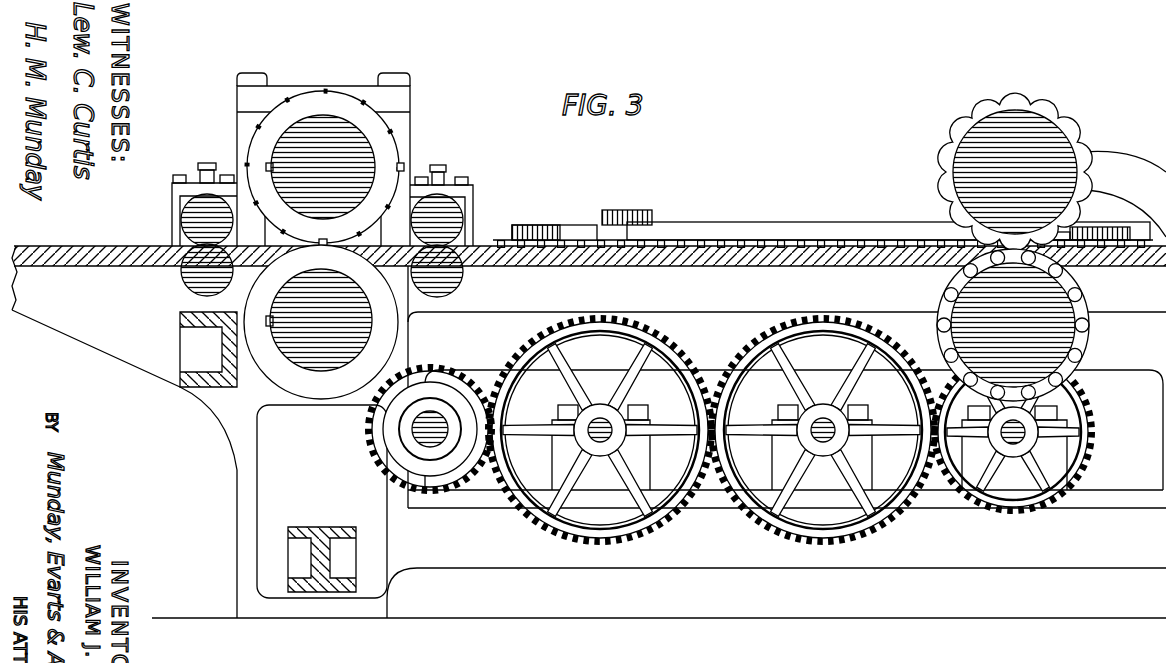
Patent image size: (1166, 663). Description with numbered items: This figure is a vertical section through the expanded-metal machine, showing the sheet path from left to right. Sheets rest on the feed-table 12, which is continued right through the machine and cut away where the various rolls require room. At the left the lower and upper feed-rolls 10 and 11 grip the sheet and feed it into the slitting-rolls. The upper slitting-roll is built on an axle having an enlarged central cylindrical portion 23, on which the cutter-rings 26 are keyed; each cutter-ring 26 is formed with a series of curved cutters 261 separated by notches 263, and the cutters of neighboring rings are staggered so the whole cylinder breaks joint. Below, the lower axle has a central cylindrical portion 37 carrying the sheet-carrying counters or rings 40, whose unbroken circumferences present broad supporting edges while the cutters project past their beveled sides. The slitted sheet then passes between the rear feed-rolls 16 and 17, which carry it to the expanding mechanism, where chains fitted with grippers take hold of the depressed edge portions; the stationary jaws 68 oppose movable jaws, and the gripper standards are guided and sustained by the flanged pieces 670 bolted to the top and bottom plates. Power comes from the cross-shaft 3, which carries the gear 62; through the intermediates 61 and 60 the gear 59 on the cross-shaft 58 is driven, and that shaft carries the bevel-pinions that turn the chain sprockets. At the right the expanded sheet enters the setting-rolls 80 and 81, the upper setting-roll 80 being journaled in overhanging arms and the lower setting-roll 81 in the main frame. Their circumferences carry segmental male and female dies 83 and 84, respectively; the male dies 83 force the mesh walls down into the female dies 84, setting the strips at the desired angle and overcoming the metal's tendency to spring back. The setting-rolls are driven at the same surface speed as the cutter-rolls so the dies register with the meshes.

The cross-shaft 3 is at (417, 430).
The lower feed-roll 10 is at (183, 271).
The upper feed-roll 11 is at (182, 213).
The feed-table 12 is at (100, 238).
The rear feed-roll 16 is at (460, 284).
The rear feed-roll 17 is at (460, 210).
The central cylindrical portion 23 is at (363, 153).
The cutter-ring 26 is at (323, 167).
The curved cutter 261 is at (403, 148).
The notch 263 is at (398, 168).
The central cylindrical portion 37 is at (320, 352).
The counter 40 is at (321, 322).
The cross-shaft 58 is at (1028, 430).
The gear 59 is at (1093, 431).
The intermediate gear 60 is at (770, 524).
The intermediate gear 61 is at (548, 528).
The gear 62 is at (378, 466).
The stationary jaw 68 is at (525, 243).
The flanged piece 670 is at (823, 235).
The upper setting-roll 80 is at (950, 172).
The lower setting-roll 81 is at (950, 294).
The male die 83 is at (942, 141).
The female die 84 is at (943, 317).